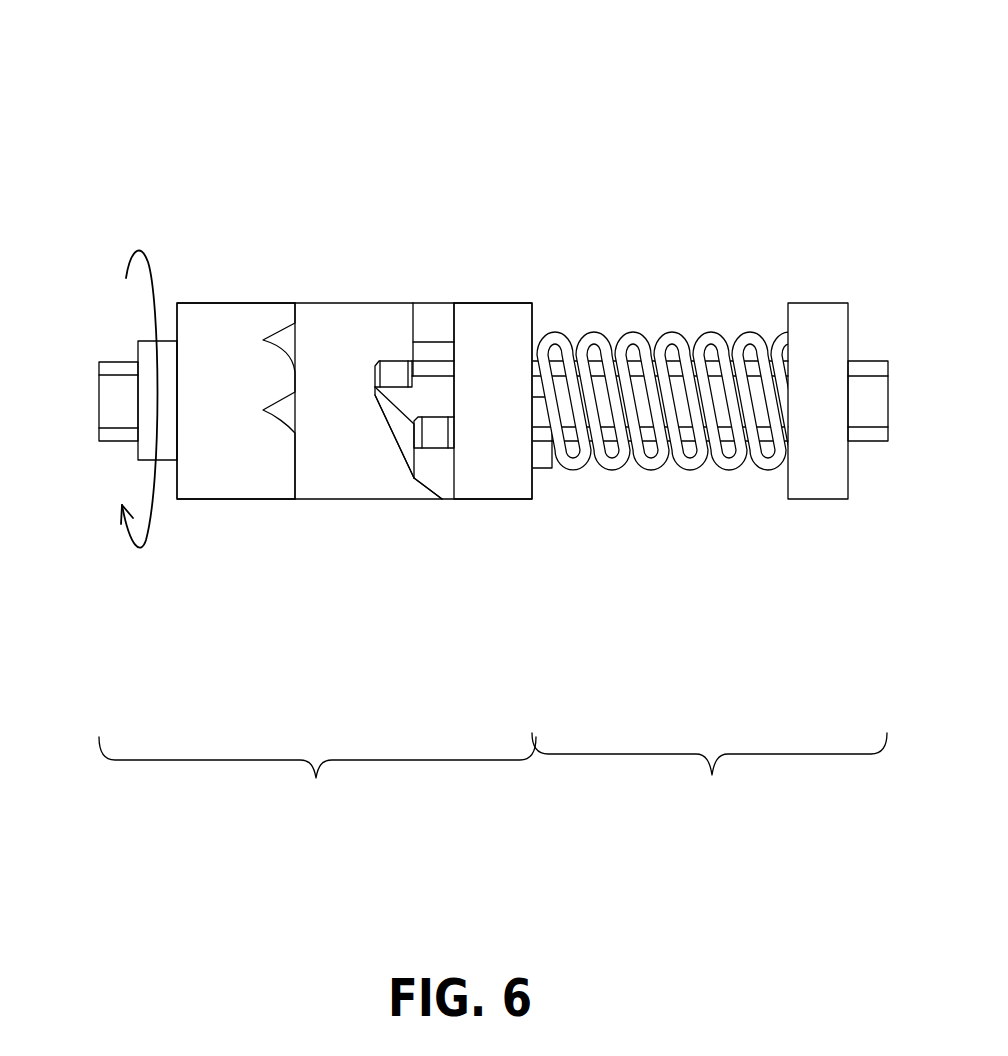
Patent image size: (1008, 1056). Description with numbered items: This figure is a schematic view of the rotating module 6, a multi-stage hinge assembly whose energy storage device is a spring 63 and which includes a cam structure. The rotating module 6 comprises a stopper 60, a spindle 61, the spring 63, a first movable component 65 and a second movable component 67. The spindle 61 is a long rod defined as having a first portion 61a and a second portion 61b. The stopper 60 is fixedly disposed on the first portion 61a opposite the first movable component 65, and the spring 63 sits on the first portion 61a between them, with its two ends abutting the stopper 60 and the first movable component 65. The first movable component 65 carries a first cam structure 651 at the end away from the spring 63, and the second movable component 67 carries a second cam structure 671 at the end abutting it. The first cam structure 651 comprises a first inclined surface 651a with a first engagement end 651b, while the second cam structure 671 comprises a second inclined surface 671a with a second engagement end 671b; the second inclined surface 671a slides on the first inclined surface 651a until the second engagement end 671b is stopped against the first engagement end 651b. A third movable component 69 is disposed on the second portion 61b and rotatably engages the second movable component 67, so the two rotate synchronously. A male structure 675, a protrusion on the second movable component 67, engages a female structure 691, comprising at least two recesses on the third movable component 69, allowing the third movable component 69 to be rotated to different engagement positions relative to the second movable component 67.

The rotating module 6 is at (200, 135).
The stopper 60 is at (837, 494).
The spindle 61 is at (98, 410).
The first portion 61a is at (709, 783).
The second portion 61b is at (317, 786).
The spring 63 is at (730, 470).
The first movable component 65 is at (497, 302).
The first cam structure 651 is at (433, 486).
The first inclined surface 651a is at (420, 485).
The first engagement end 651b is at (436, 425).
The second movable component 67 is at (357, 302).
The second cam structure 671 is at (405, 481).
The second inclined surface 671a is at (396, 448).
The second engagement end 671b is at (392, 370).
The male structure 675 is at (288, 430).
The third movable component 69 is at (238, 302).
The female structure 691 is at (272, 350).